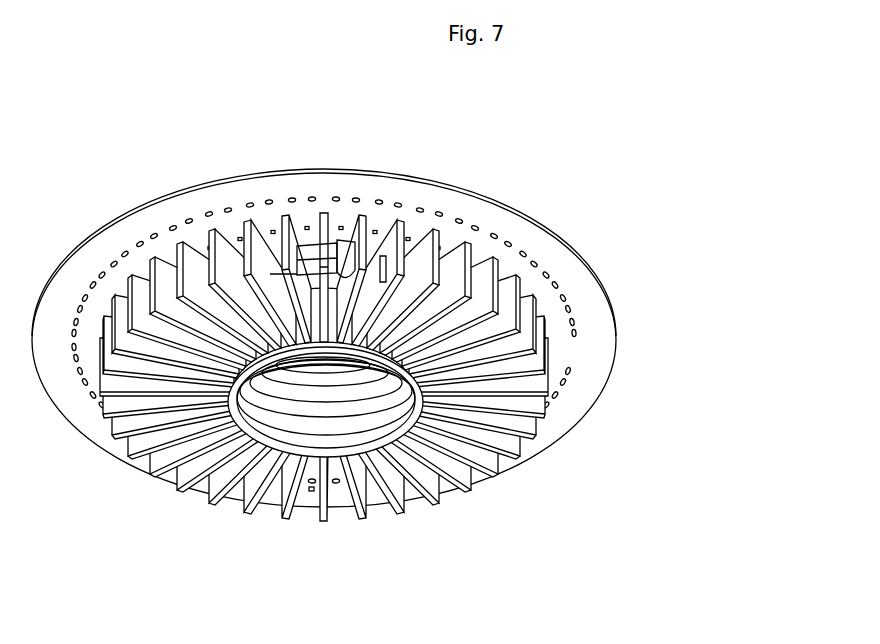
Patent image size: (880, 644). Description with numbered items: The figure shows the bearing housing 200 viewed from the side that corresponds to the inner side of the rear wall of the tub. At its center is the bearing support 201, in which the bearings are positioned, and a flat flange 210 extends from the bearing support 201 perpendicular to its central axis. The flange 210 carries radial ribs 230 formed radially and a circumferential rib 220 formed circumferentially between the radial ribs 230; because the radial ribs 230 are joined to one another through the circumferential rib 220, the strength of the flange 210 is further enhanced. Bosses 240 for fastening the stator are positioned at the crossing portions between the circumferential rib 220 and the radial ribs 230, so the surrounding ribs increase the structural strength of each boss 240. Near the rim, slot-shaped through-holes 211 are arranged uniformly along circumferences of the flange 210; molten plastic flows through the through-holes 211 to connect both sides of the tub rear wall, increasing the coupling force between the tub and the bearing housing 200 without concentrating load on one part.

The bearing housing 200 is at (331, 351).
The bearing support 201 is at (311, 493).
The flange 210 is at (574, 417).
The through-holes 211 is at (183, 218).
The circumferential rib 220 is at (307, 253).
The radial ribs 230 is at (192, 462).
The bosses 240 is at (347, 242).